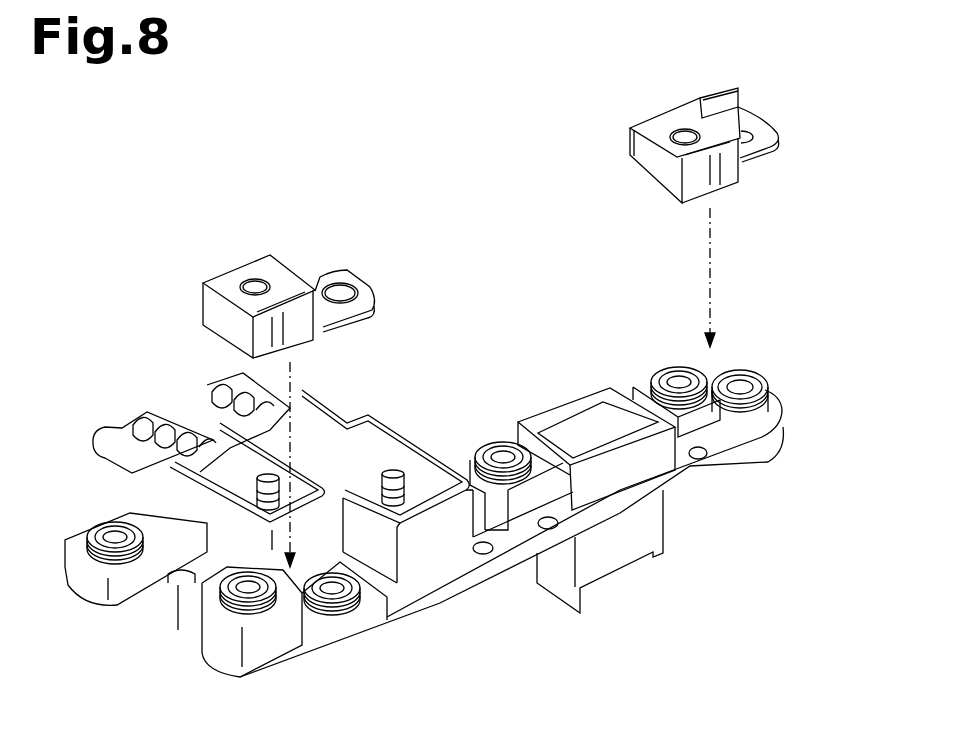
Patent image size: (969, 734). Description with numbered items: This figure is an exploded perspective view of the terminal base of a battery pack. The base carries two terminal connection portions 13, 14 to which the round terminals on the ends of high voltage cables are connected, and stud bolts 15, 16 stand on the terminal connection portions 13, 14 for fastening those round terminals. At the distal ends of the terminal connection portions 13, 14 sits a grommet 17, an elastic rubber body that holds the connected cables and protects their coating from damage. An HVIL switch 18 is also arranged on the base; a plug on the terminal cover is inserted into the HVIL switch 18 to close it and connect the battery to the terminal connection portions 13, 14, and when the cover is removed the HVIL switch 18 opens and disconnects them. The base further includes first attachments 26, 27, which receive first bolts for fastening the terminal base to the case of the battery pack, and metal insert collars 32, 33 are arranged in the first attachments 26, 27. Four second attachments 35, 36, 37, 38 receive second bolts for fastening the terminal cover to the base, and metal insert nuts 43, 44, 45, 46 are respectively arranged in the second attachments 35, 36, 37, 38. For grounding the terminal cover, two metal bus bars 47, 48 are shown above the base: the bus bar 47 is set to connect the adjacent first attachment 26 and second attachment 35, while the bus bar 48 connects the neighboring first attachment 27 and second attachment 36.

The terminal connection portion 13 is at (368, 442).
The terminal connection portion 14 is at (203, 470).
The stud bolt 15 is at (393, 472).
The stud bolt 16 is at (270, 475).
The grommet 17 is at (172, 412).
The HVIL switch 18 is at (573, 422).
The first attachment 26 is at (740, 385).
The first attachment 27 is at (340, 595).
The insert collar 32 is at (767, 380).
The insert collar 33 is at (290, 600).
The second attachment 35 is at (680, 382).
The second attachment 36 is at (237, 600).
The second attachment 37 is at (502, 453).
The second attachment 38 is at (115, 537).
The insert nut 43 is at (645, 380).
The insert nut 44 is at (193, 633).
The insert nut 45 is at (477, 447).
The insert nut 46 is at (85, 537).
The bus bar 47 is at (663, 157).
The bus bar 48 is at (262, 263).